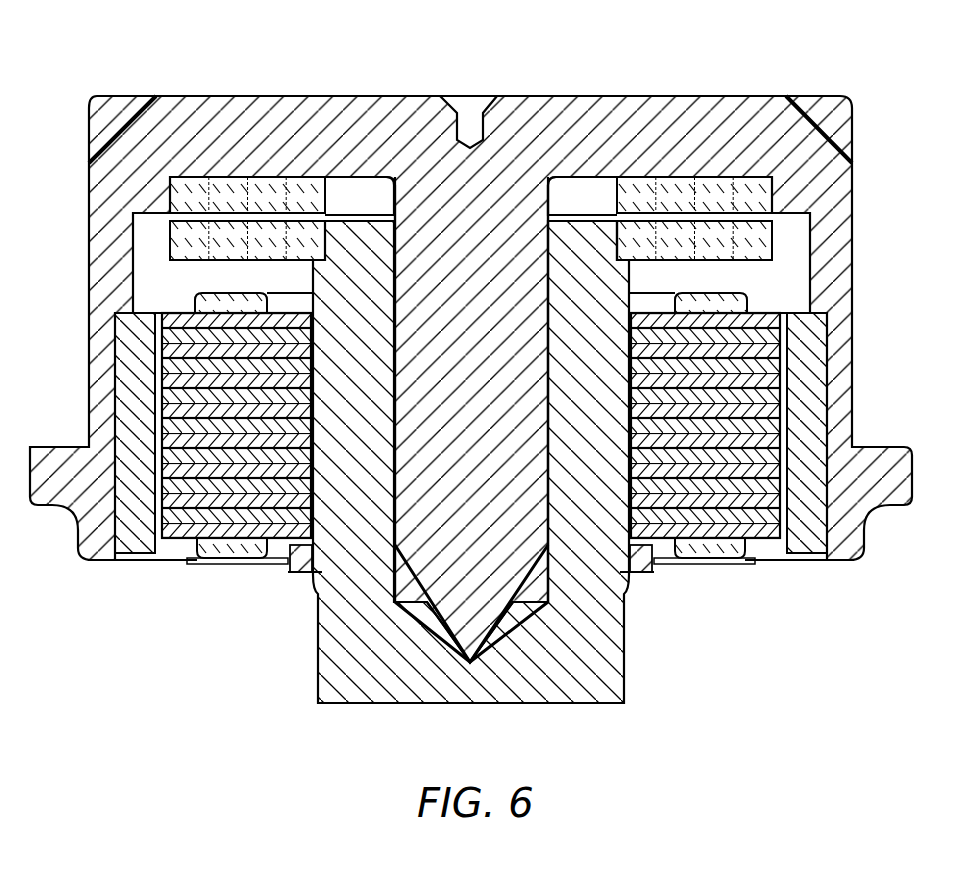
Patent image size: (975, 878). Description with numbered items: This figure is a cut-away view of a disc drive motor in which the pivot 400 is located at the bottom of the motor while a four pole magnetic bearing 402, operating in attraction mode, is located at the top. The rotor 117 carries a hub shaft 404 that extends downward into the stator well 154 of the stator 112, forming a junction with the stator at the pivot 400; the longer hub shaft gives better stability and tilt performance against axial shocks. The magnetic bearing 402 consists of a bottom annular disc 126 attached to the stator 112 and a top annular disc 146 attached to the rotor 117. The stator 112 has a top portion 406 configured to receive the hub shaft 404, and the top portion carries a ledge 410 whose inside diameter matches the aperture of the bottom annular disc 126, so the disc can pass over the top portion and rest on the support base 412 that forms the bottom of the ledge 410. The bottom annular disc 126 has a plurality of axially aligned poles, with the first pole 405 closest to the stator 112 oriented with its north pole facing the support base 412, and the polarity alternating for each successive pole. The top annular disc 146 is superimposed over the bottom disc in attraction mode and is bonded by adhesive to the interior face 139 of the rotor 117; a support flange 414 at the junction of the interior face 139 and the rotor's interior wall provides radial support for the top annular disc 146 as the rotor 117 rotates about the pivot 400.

The rotor 117 is at (200, 143).
The ledge 410 is at (325, 215).
The top portion 406 is at (343, 217).
The stator well 154 is at (384, 177).
The interior face 139 is at (588, 178).
The magnetic bearing 402 is at (685, 188).
The top annular disc 146 is at (702, 187).
The first pole 405 is at (628, 252).
The bottom annular disc 126 is at (742, 250).
The support base 412 is at (300, 262).
The support flange 414 is at (130, 192).
The stator 112 is at (360, 646).
The pivot 400 is at (472, 663).
The hub shaft 404 is at (497, 575).